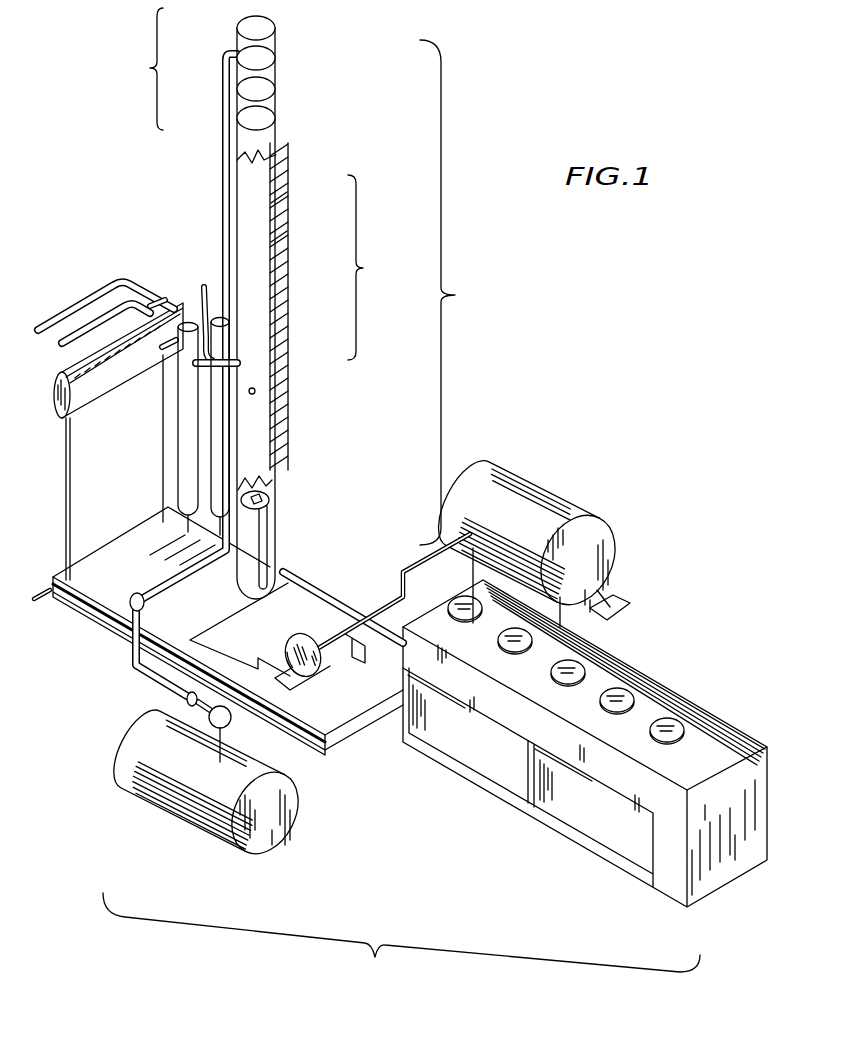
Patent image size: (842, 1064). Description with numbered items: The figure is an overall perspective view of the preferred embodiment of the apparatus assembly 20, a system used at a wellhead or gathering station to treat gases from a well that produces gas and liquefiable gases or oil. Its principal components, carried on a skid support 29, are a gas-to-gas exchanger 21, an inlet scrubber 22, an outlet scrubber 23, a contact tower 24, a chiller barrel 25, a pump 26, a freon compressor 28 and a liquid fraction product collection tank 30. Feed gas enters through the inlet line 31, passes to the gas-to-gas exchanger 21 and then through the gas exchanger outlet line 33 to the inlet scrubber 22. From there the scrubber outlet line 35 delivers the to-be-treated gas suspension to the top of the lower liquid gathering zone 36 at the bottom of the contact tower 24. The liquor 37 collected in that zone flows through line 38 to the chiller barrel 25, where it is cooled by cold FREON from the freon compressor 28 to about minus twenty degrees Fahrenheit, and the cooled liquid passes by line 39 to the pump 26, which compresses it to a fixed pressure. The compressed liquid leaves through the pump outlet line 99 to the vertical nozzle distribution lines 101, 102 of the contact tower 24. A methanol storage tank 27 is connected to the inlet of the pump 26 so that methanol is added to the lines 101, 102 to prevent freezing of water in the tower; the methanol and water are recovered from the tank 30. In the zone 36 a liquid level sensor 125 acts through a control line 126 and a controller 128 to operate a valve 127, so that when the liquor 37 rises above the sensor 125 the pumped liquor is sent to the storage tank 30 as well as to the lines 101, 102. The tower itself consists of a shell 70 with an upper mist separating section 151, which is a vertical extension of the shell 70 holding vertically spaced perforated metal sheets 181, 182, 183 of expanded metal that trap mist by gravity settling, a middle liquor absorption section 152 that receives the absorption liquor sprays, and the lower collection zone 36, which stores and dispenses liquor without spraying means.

The apparatus assembly 20 is at (401, 943).
The gas-to-gas exchanger 21 is at (55, 388).
The inlet scrubber 22 is at (218, 412).
The outlet scrubber 23 is at (185, 391).
The contact tower 24 is at (460, 292).
The chiller barrel 25 is at (342, 571).
The pump 26 is at (302, 613).
The methanol storage tank 27 is at (550, 497).
The freon compressor 28 is at (608, 658).
The skid support 29 is at (132, 528).
The liquid fraction product collection tank 30 is at (167, 803).
The inlet line 31 is at (80, 298).
The gas exchanger outlet line 33 is at (208, 330).
The scrubber outlet line 35 is at (240, 358).
The lower liquid gathering zone 36 is at (279, 552).
The liquor 37 is at (268, 482).
The line 38 is at (268, 531).
The line 39 is at (366, 645).
The shell 70 is at (262, 287).
The pump outlet line 99 is at (212, 624).
The vertical nozzle distribution line 101 is at (285, 198).
The vertical nozzle distribution line 102 is at (283, 242).
The liquid level sensor 125 is at (271, 503).
The control line 126 is at (174, 583).
The valve 127 is at (228, 727).
The controller 128 is at (140, 572).
The upper mist separating section 151 is at (132, 69).
The middle liquor absorption section 152 is at (384, 267).
The perforated metal sheet 181 is at (237, 47).
The perforated metal sheet 182 is at (237, 73).
The perforated metal sheet 183 is at (237, 108).